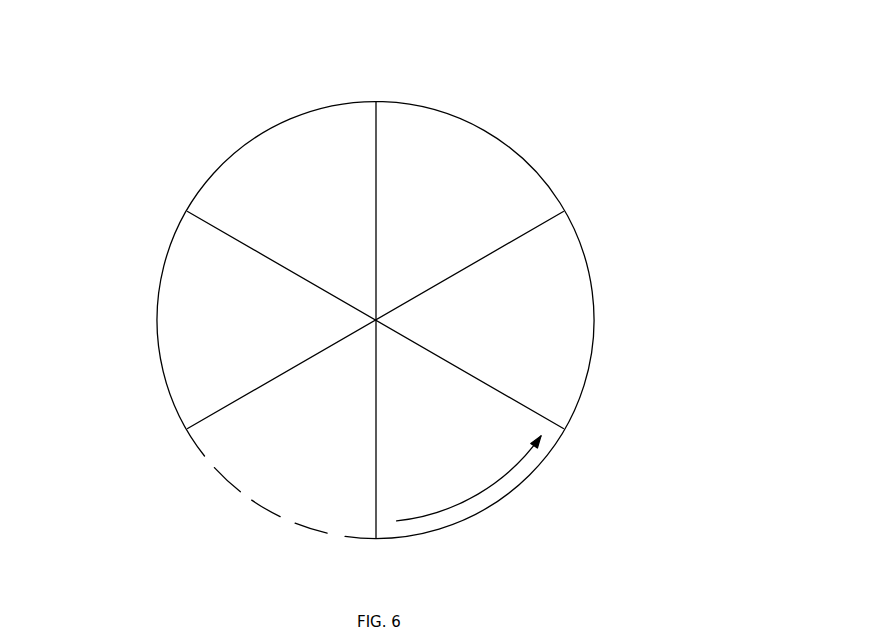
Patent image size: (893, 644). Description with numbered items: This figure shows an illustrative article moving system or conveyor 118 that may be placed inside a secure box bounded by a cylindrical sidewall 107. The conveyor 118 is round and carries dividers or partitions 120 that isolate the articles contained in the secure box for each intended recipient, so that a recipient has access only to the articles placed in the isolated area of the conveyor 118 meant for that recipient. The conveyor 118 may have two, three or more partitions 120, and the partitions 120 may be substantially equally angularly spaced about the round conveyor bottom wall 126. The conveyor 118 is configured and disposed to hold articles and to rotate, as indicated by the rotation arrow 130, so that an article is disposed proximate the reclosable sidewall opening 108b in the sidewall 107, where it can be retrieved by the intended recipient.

The cylindrical sidewall 107 is at (593, 292).
The sidewall opening 108b is at (222, 488).
The conveyor 118 is at (453, 183).
The partitions 120 is at (376, 190).
The round conveyor bottom wall 126 is at (223, 323).
The rotation arrow 130 is at (477, 497).